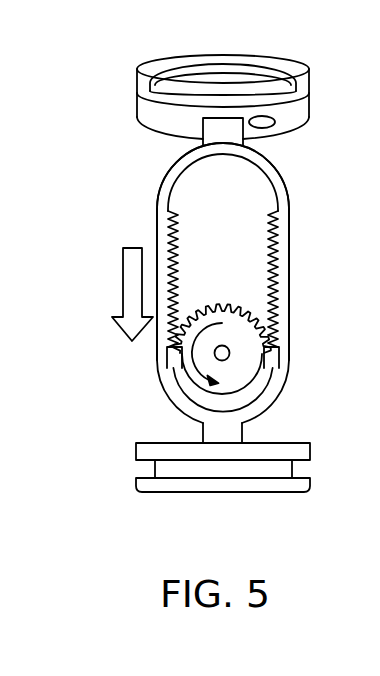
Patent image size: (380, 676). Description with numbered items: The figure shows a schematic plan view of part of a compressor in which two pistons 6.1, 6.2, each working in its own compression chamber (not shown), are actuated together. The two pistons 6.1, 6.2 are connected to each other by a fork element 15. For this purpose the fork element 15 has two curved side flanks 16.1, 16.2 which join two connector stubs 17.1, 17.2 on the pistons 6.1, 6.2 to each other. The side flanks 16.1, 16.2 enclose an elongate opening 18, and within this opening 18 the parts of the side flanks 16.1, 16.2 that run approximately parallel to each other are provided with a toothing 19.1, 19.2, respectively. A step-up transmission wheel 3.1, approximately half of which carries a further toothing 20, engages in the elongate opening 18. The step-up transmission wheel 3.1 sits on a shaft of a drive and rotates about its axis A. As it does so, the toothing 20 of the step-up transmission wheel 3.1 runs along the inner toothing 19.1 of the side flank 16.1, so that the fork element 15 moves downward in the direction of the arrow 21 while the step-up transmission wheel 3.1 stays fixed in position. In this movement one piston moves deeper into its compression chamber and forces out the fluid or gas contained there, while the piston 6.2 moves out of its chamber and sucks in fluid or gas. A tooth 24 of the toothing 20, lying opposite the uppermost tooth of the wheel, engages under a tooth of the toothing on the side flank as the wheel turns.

The piston 6.1 is at (168, 63).
The connector stub 17.1 is at (220, 128).
The fork element 15 is at (170, 406).
The side flank 16.1 is at (167, 187).
The side flank 16.2 is at (283, 194).
The elongate opening 18 is at (270, 188).
The toothing 19.1 is at (167, 218).
The toothing 19.2 is at (271, 302).
The opposite tooth 24 is at (163, 343).
The toothing 20 is at (257, 318).
The step-up transmission wheel 3.1 is at (165, 367).
The axis A is at (229, 355).
The arrow 21 is at (124, 268).
The connector stub 17.2 is at (234, 440).
The piston 6.2 is at (180, 483).